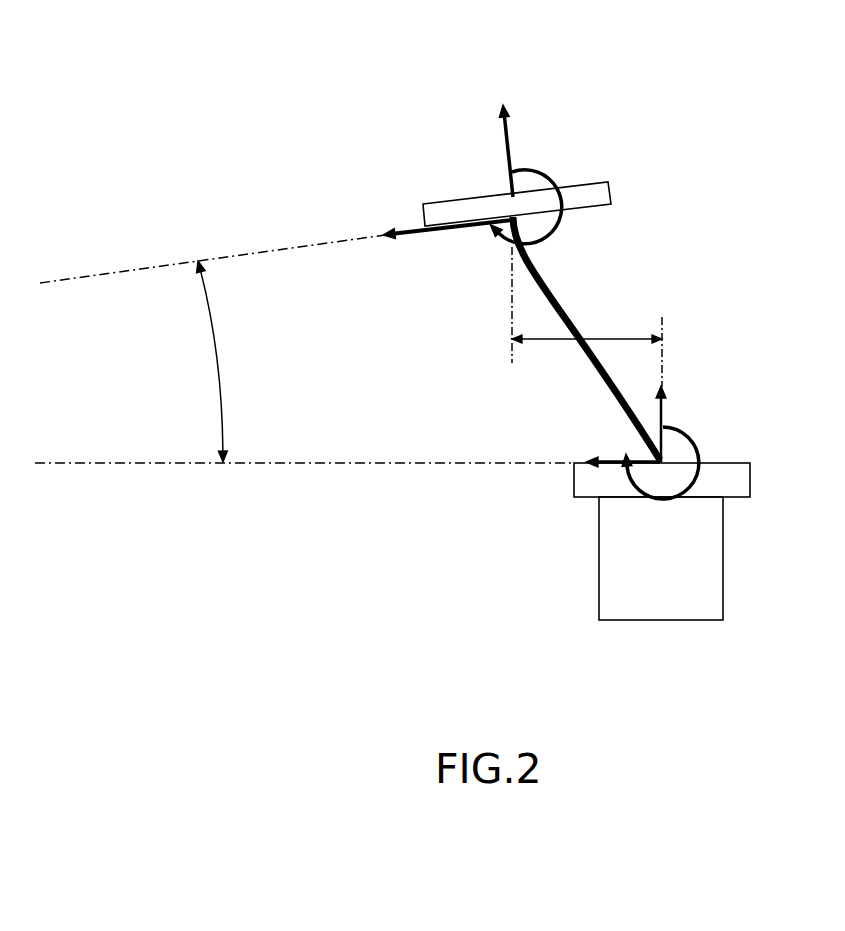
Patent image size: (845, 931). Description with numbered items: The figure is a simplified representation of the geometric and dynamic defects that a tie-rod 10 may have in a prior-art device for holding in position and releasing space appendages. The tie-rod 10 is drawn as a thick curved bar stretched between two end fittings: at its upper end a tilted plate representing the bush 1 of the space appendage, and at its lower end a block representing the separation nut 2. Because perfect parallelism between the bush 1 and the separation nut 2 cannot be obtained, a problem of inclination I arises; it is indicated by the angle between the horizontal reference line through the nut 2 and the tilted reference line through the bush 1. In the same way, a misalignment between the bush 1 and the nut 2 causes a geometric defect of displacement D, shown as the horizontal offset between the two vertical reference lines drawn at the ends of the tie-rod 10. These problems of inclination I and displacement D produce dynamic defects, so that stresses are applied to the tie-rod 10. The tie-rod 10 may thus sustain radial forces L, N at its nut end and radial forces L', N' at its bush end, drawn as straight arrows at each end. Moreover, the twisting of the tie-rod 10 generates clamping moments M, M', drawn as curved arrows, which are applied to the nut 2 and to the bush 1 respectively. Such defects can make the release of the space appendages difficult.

The bush 1 is at (585, 178).
The separation nut 2 is at (667, 598).
The tie-rod 10 is at (540, 280).
The radial force N' is at (543, 120).
The clamping moment M' is at (546, 172).
The radial force L' is at (448, 268).
The radial force N is at (708, 405).
The clamping moment M is at (722, 456).
The radial force L is at (576, 434).
The displacement D is at (600, 339).
The inclination I is at (215, 352).